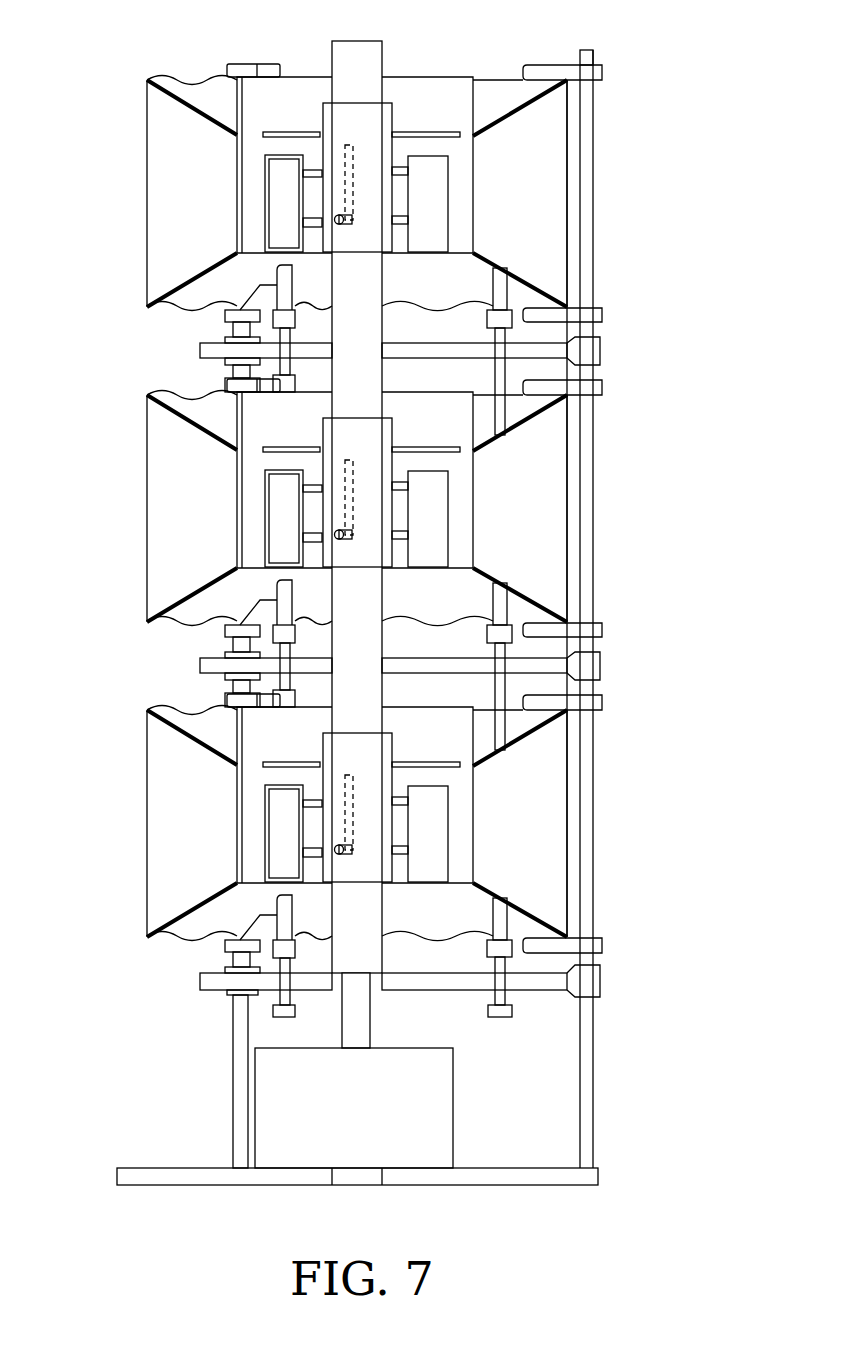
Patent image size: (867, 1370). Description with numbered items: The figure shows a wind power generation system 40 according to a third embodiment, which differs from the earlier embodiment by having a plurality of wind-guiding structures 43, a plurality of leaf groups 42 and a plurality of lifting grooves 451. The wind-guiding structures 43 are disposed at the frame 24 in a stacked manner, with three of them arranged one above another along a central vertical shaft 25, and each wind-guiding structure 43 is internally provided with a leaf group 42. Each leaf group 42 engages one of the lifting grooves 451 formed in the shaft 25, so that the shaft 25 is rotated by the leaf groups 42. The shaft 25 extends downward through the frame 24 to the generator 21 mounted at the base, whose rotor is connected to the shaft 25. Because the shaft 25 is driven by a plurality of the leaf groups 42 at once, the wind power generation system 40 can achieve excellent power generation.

The generator 21 is at (435, 1110).
The frame 24 is at (587, 523).
The shaft 25 is at (382, 60).
The wind power generation system 40 is at (722, 1223).
The leaf group 42 is at (315, 116).
The wind-guiding structure 43 is at (161, 70).
The lifting groove 451 is at (357, 145).